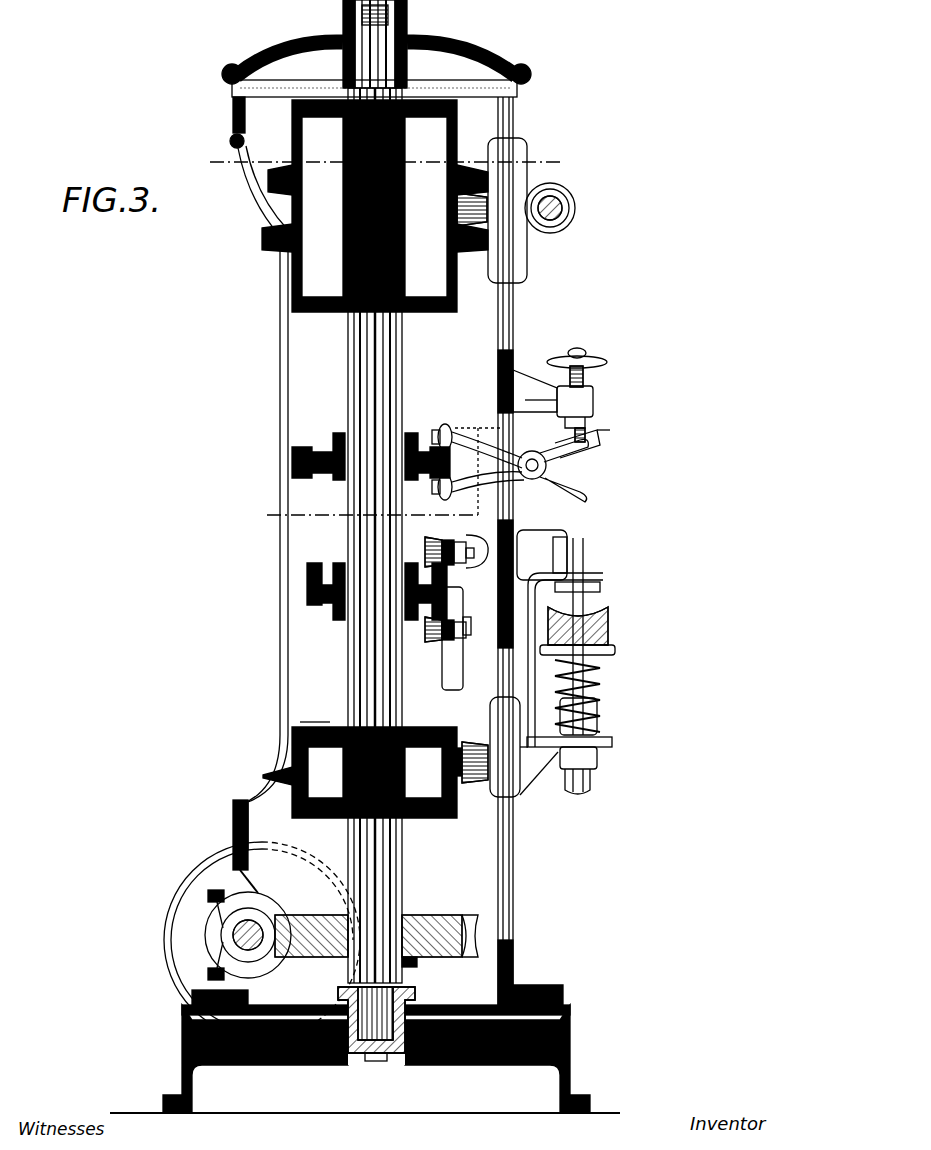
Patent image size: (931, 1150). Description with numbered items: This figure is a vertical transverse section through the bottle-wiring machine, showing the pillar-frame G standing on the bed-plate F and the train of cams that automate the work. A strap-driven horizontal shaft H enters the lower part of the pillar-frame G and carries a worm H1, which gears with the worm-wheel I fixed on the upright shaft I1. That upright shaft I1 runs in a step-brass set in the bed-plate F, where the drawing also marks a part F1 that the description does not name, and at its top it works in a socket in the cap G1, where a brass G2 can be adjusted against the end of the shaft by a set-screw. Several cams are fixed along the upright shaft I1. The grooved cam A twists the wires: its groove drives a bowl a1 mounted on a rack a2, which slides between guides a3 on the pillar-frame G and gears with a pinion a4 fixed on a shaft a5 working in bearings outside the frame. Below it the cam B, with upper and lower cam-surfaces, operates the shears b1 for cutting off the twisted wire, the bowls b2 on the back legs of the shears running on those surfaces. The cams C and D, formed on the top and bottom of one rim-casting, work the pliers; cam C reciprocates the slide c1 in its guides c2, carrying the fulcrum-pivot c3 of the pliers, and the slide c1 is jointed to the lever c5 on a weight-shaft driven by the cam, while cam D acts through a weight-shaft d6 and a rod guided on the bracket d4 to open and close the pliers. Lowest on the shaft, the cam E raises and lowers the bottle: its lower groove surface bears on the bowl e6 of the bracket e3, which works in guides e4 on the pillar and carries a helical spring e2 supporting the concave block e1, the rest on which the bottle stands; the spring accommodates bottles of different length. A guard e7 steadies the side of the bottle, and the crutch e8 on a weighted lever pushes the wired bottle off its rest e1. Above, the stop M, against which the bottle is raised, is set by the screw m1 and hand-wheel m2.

The cam A is at (385, 206).
The bowl a1 is at (472, 209).
The rack a2 is at (527, 148).
The guides a3 is at (507, 548).
The pinion a4 is at (560, 208).
The shaft a5 is at (556, 216).
The cam B is at (434, 466).
The shears b1 is at (516, 463).
The bowls b2 is at (458, 503).
The cam C is at (325, 580).
The slide c1 is at (532, 584).
The guides c2 is at (437, 547).
The fulcrum-pivot c3 is at (460, 566).
The lever c5 is at (577, 696).
The cam D is at (376, 599).
The bracket d4 is at (430, 640).
The weight-shaft d6 is at (445, 638).
The cam E is at (360, 759).
The concave block e1 is at (577, 631).
The helical spring e2 is at (597, 712).
The bracket e3 is at (625, 742).
The guides e4 is at (510, 808).
The bowl e6 is at (472, 762).
The guard e7 is at (603, 576).
The crutch e8 is at (600, 588).
The bed-plate F is at (365, 1051).
The shaft socket F1 is at (376, 1024).
The pillar-frame G is at (398, 551).
The cap G1 is at (375, 44).
The brass G2 is at (376, 82).
The horizontal shaft H is at (262, 940).
The worm H1 is at (215, 944).
The worm-wheel I is at (376, 941).
The upright shaft I1 is at (375, 535).
The stop M is at (545, 396).
The screw m1 is at (583, 376).
The hand-wheel m2 is at (600, 360).